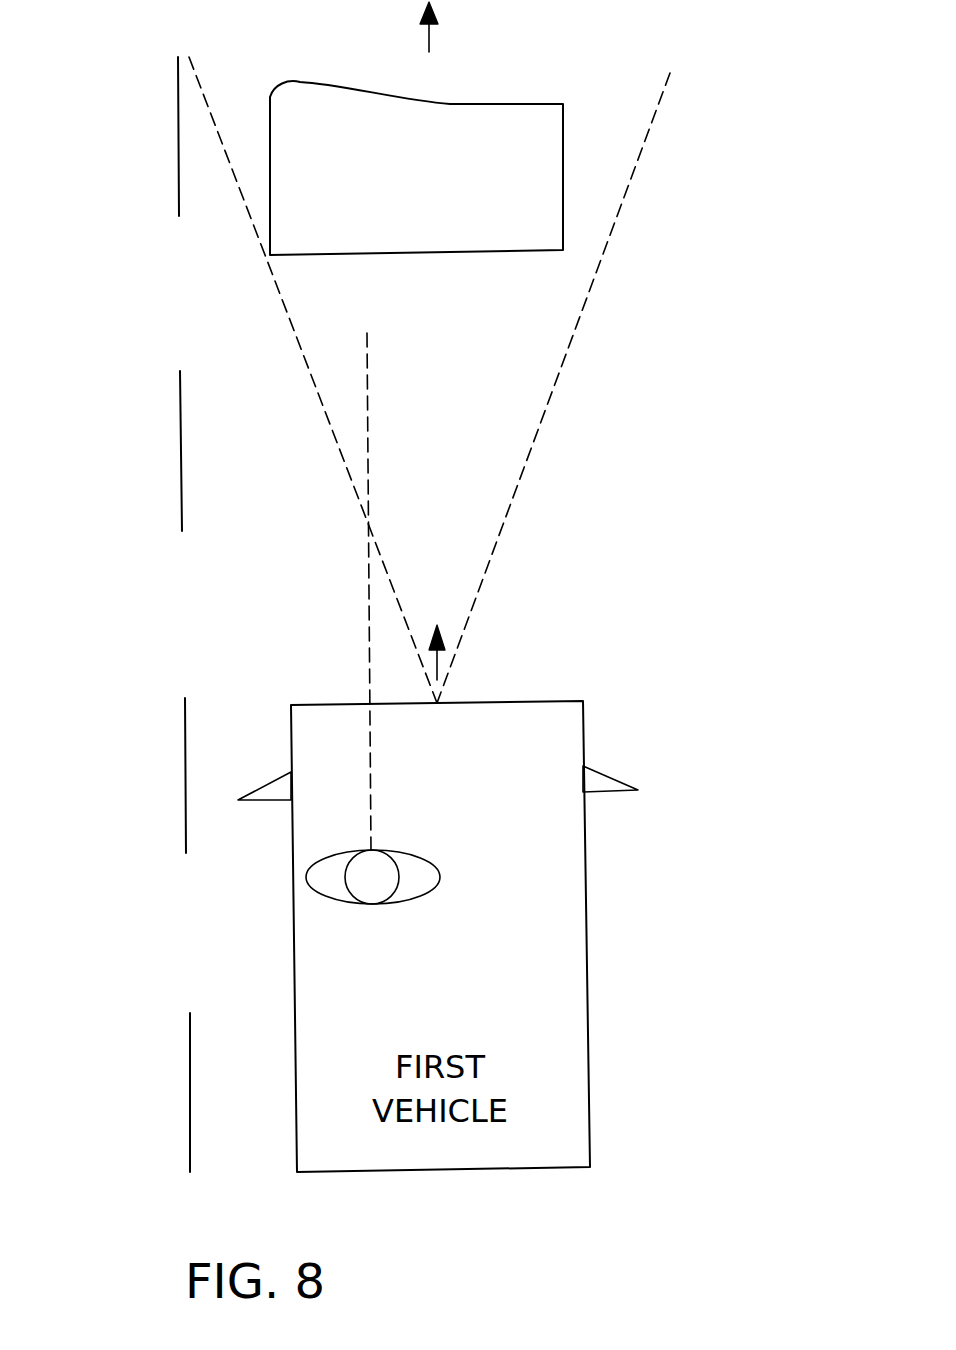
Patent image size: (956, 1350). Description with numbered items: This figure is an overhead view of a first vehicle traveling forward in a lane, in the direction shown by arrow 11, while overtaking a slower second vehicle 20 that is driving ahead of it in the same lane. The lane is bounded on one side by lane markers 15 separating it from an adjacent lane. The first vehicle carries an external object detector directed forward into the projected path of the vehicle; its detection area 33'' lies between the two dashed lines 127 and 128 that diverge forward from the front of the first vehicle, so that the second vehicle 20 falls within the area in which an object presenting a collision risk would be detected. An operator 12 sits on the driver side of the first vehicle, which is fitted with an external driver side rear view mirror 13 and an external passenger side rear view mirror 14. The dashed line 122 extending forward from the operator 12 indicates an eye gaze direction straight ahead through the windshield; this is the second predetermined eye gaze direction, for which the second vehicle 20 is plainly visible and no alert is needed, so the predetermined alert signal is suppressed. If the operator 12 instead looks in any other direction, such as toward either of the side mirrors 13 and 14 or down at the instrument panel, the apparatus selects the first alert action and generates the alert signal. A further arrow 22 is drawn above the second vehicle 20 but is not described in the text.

The lane markers 15 is at (177, 123).
The direction of travel of second vehicle 22 is at (430, 22).
The second vehicle 20 is at (393, 255).
The dashed line 127 is at (303, 359).
The dashed line 128 is at (567, 355).
The detection area 33'' is at (465, 419).
The arrow 11 is at (434, 648).
The driver side rear view mirror 13 is at (253, 787).
The passenger side rear view mirror 14 is at (617, 780).
The dashed line 122 is at (370, 793).
The operator 12 is at (360, 905).